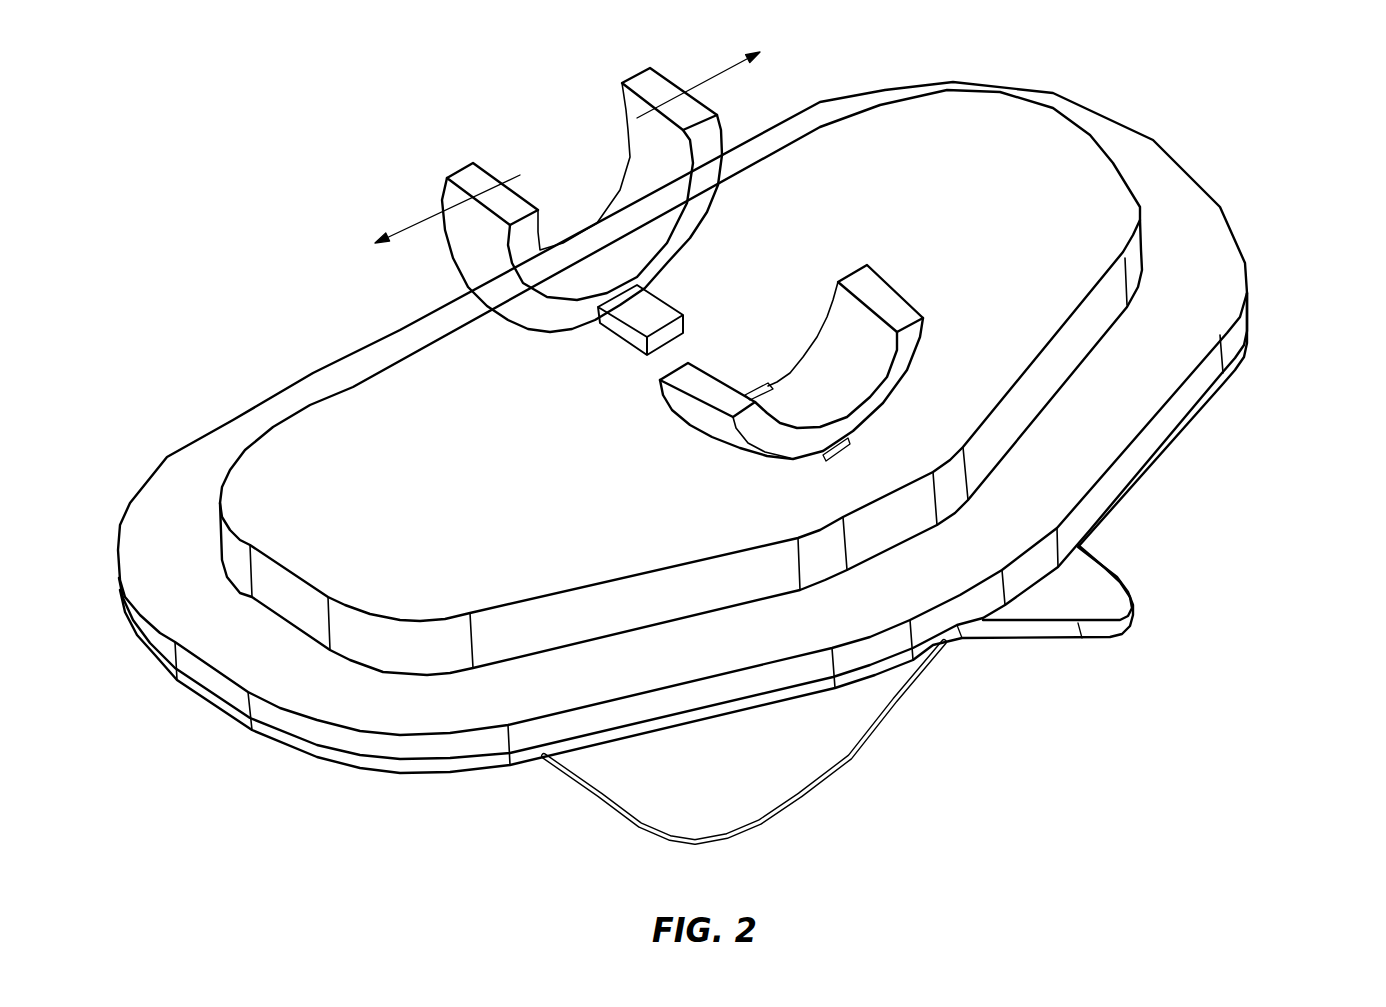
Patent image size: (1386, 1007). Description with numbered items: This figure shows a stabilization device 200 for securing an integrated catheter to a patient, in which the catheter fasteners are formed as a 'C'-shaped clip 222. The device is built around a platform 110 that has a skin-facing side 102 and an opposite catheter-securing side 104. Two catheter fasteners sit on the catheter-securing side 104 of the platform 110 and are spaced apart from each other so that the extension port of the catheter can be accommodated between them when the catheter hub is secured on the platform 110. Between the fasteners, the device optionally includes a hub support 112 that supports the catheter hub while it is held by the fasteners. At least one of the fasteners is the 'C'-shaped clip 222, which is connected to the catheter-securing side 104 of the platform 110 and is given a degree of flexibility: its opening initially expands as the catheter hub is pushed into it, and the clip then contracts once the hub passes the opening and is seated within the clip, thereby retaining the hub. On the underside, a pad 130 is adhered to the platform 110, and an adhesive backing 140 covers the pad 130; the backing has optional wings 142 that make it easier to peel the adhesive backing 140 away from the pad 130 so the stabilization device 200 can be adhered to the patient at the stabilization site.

The stabilization device 200 is at (165, 180).
The skin-facing side 102 is at (388, 773).
The catheter-securing side 104 is at (314, 372).
The platform 110 is at (1032, 142).
The hub support 112 is at (655, 310).
The pad 130 is at (1175, 193).
The adhesive backing 140 is at (1172, 432).
The wings 142 is at (903, 703).
The 'C'-shaped clip 222 is at (633, 167).